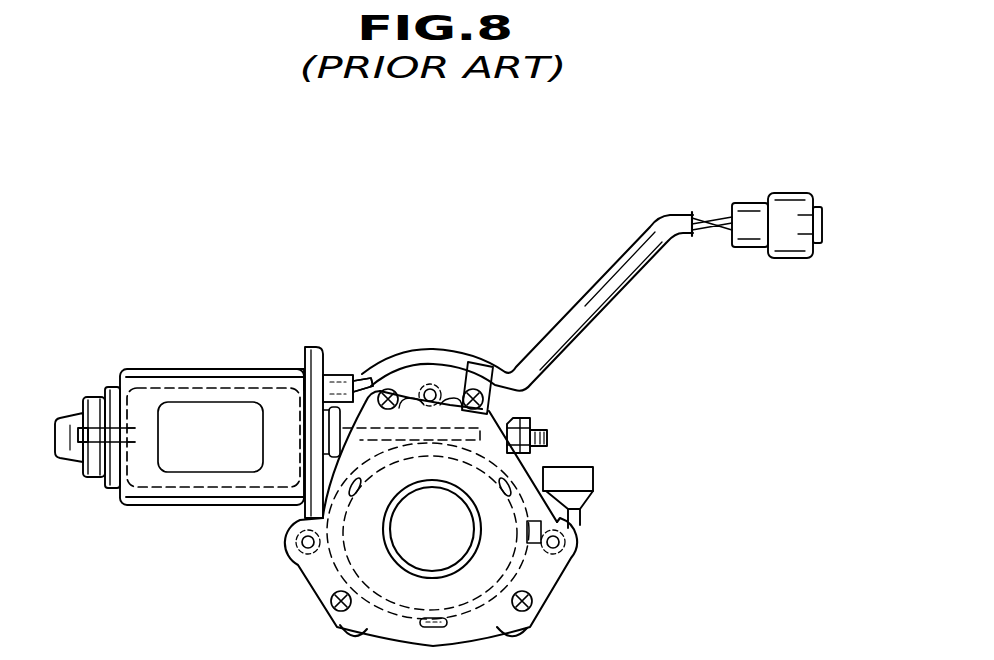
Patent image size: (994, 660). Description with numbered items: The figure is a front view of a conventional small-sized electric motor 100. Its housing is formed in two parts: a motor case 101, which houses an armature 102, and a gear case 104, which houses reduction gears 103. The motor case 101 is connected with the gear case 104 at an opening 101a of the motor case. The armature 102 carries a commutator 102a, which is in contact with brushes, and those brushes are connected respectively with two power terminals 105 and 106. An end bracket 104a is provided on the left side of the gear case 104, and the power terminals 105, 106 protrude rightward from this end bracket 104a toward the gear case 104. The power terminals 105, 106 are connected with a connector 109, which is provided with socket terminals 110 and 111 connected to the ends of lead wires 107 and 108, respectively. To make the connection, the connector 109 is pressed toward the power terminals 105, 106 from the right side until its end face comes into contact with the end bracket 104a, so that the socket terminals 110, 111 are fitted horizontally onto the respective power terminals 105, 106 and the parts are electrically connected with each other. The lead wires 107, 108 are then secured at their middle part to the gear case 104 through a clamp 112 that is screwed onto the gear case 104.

The small-sized electric motor 100 is at (305, 233).
The motor case 101 is at (130, 370).
The opening 101a is at (300, 360).
The armature 102 is at (197, 388).
The commutator 102a is at (320, 462).
The reduction gears 103 is at (523, 462).
The gear case 104 is at (500, 407).
The end bracket 104a is at (323, 350).
The power terminal 105 is at (337, 362).
The power terminal 106 is at (338, 388).
The lead wire 107 is at (708, 213).
The lead wire 108 is at (723, 213).
The connector 109 is at (370, 357).
The socket terminal 110 is at (363, 360).
The socket terminal 111 is at (363, 385).
The clamp 112 is at (513, 380).